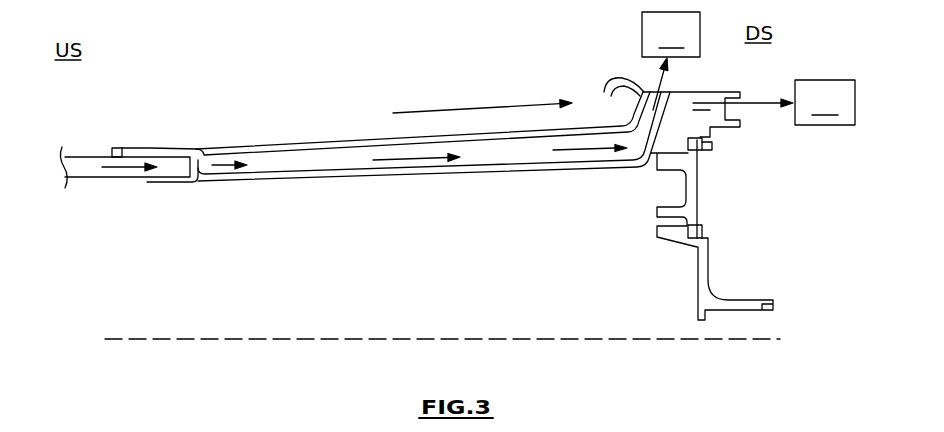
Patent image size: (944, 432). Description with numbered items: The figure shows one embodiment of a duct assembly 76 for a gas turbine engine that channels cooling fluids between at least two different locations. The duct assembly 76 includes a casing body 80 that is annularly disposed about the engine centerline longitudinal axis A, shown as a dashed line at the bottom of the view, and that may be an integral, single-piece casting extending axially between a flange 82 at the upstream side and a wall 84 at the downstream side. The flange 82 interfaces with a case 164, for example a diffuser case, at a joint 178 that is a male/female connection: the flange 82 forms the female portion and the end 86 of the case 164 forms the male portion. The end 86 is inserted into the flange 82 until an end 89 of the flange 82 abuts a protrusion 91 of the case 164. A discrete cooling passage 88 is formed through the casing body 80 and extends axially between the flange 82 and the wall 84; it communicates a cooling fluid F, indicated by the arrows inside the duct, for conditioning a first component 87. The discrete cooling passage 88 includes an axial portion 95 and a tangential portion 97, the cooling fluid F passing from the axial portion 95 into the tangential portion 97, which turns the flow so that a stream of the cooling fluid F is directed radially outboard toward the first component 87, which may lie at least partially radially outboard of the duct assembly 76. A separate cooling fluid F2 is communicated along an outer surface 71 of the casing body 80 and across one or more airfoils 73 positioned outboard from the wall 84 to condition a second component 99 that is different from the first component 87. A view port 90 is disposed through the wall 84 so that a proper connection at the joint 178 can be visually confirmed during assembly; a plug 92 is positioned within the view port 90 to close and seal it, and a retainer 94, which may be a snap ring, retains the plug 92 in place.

The case 164 is at (75, 180).
The protrusion 91 is at (117, 148).
The end of the flange 89 is at (118, 148).
The joint 178 is at (148, 128).
The flange 82 is at (182, 135).
The end of the case 86 is at (165, 183).
The casing body 80 is at (268, 135).
The outer surface 71 is at (336, 141).
The duct assembly 76 is at (410, 76).
The tangential portion 97 is at (636, 112).
The first component 87 is at (671, 61).
The second component 99 is at (774, 102).
The airfoils 73 is at (723, 100).
The retainer 94 is at (703, 144).
The plug 92 is at (694, 196).
The view port 90 is at (679, 199).
The wall 84 is at (716, 255).
The discrete cooling passage 88 is at (443, 172).
The axial portion 95 is at (505, 158).
The cooling fluid F is at (122, 177).
The separate cooling fluid F2 is at (466, 108).
The engine centerline longitudinal axis A is at (328, 339).